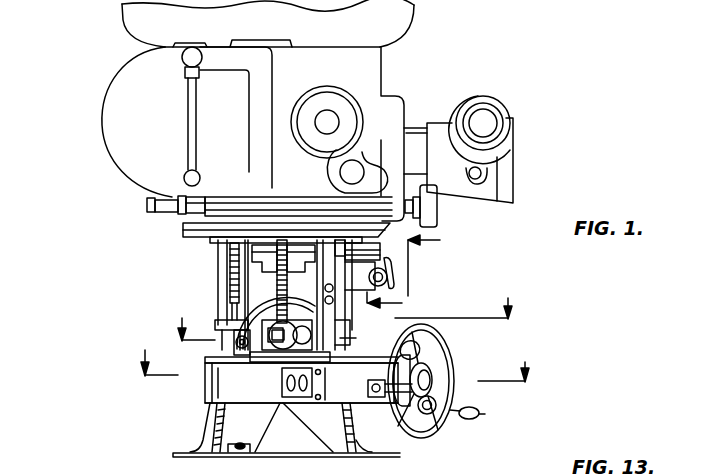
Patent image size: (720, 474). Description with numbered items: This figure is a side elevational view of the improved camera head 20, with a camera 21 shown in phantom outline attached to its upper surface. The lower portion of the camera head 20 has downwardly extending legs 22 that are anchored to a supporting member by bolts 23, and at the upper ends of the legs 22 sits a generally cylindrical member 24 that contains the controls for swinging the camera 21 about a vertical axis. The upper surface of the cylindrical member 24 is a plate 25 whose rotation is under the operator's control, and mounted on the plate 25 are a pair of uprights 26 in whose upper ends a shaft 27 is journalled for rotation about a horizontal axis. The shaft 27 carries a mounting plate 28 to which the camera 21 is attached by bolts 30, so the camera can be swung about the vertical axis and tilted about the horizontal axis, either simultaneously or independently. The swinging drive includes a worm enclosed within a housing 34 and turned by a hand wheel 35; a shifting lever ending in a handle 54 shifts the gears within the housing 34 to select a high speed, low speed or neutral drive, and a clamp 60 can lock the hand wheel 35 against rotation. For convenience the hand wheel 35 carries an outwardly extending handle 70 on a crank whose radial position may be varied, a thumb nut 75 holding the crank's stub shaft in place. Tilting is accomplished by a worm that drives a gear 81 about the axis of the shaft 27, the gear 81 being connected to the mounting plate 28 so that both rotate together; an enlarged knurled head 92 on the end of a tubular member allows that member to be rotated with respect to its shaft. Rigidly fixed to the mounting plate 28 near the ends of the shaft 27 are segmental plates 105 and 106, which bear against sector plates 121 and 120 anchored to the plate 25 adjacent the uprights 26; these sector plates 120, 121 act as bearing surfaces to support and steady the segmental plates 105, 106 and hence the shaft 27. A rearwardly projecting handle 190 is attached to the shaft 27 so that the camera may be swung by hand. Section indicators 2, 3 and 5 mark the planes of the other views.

The camera 21 is at (106, 144).
The shaft 27 is at (300, 248).
The mounting plate 28 is at (230, 229).
The gear 81 is at (283, 246).
The bolts 30 is at (255, 253).
The uprights 26 is at (222, 280).
The segmental plate 105 is at (232, 302).
The sector plate 121 is at (222, 333).
The rearwardly projecting handle 190 is at (386, 278).
The segmental plate 106 is at (338, 303).
The sector plate 120 is at (340, 336).
The knurled head 92 is at (282, 346).
The plate 25 is at (215, 362).
The handle 54 is at (301, 383).
The generally cylindrical member 24 is at (193, 397).
The legs 22 is at (233, 418).
The bolts 23 is at (246, 450).
The camera head 20 is at (107, 375).
The housing 34 is at (366, 410).
The hand wheel 35 is at (437, 431).
The clamp 60 is at (424, 347).
The thumb nut 75 is at (440, 402).
The handle 70 is at (479, 411).
The section line 2 is at (331, 355).
The section line 3 is at (345, 308).
The section line 5 is at (410, 273).